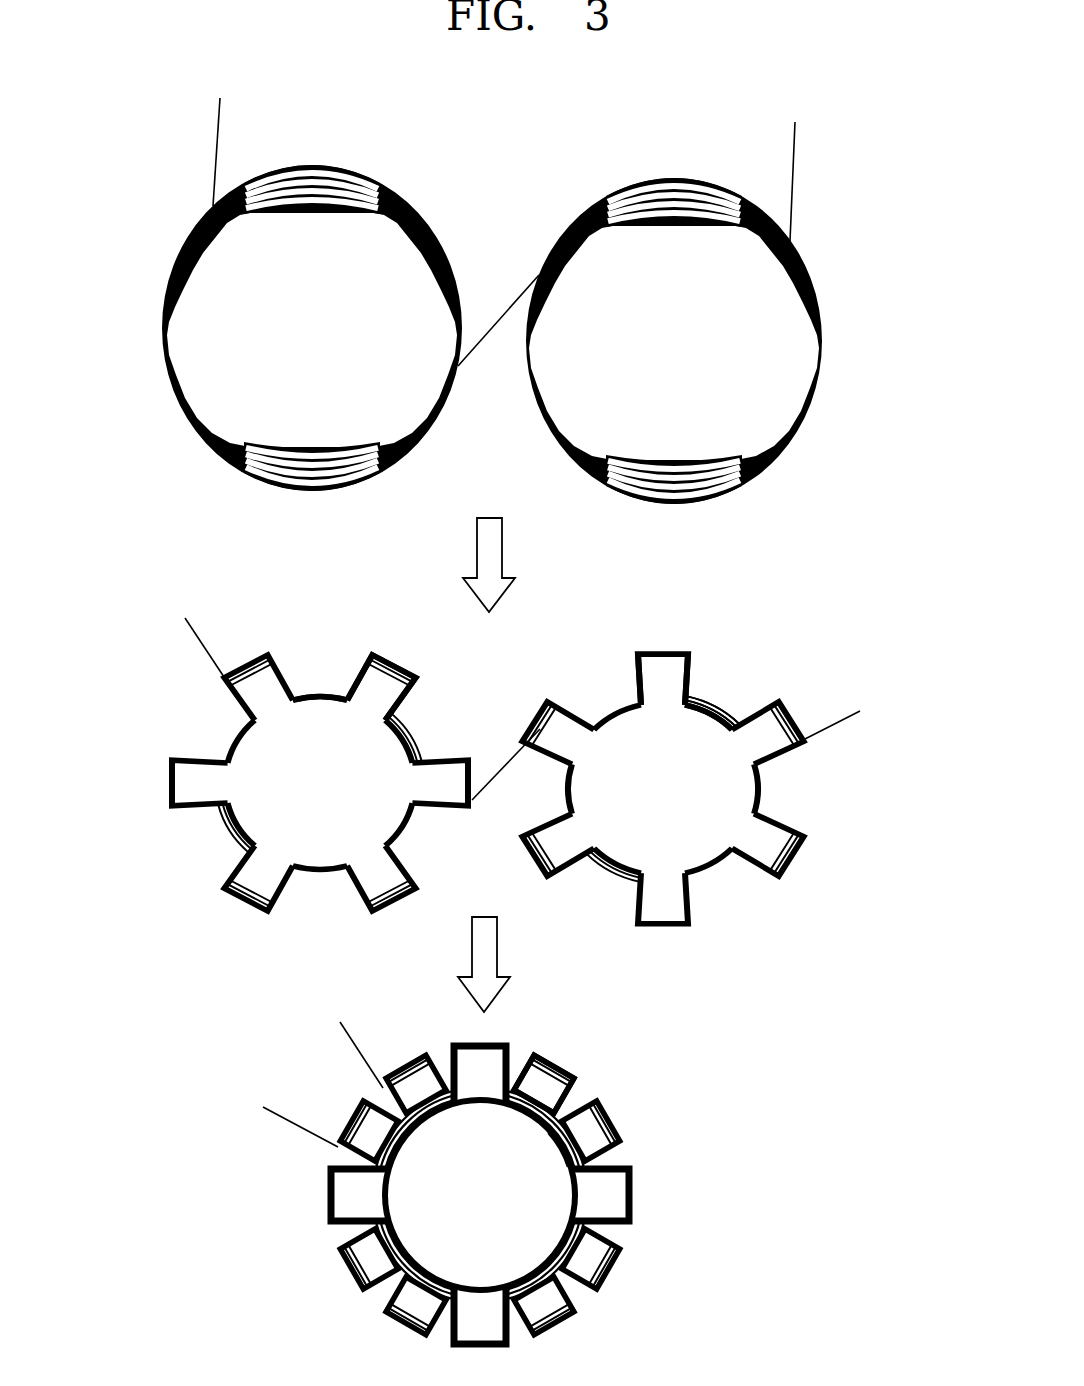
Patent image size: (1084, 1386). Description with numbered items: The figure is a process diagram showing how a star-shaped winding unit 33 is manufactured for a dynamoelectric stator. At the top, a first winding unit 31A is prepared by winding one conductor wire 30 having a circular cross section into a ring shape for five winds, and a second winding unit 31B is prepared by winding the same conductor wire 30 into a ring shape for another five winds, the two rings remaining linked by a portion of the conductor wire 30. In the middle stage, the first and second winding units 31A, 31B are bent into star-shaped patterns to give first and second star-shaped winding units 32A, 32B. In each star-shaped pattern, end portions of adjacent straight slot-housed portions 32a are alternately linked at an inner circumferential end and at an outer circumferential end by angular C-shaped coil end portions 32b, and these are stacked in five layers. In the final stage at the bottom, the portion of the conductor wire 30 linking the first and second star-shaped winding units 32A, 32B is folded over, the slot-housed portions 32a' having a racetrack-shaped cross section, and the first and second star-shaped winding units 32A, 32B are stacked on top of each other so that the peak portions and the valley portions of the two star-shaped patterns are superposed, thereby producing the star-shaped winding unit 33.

The conductor wire 30 is at (224, 134).
The first winding unit 31A is at (405, 192).
The second winding unit 31B is at (584, 209).
The first star-shaped winding unit 32A is at (426, 716).
The second star-shaped winding unit 32B is at (732, 703).
The straight slot-housed portion 32a is at (516, 703).
The angular C-shaped coil end portion 32b is at (318, 700).
The slot-housed portion having a racetrack-shaped cross section 32a' is at (528, 1108).
The star-shaped winding unit 33 is at (721, 1095).